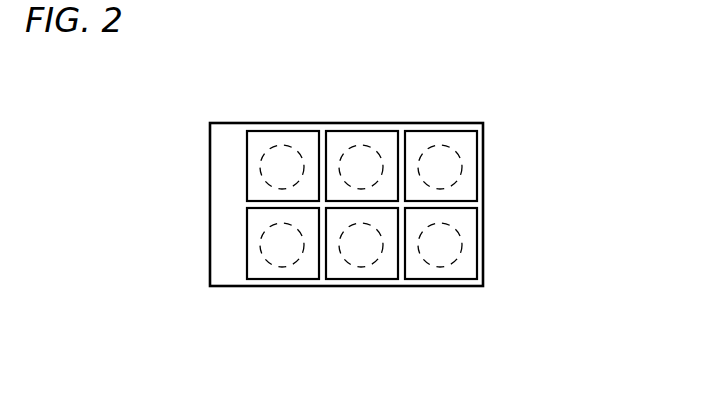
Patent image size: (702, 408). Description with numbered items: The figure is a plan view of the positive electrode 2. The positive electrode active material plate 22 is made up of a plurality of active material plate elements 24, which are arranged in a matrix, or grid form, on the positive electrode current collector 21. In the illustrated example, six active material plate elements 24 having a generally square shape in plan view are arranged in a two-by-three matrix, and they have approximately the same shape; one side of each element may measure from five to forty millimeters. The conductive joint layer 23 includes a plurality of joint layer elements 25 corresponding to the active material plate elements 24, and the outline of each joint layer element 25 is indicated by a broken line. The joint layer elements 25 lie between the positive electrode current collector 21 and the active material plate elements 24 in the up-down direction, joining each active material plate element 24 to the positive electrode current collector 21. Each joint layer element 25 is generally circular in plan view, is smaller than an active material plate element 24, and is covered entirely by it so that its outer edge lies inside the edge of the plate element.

The positive electrode 2 is at (210, 60).
The positive electrode current collector 21 is at (222, 167).
The positive electrode active material plate 22 is at (307, 76).
The conductive joint layer 23 is at (322, 328).
The active material plate element 24 is at (268, 136).
The joint layer element 25 is at (440, 145).